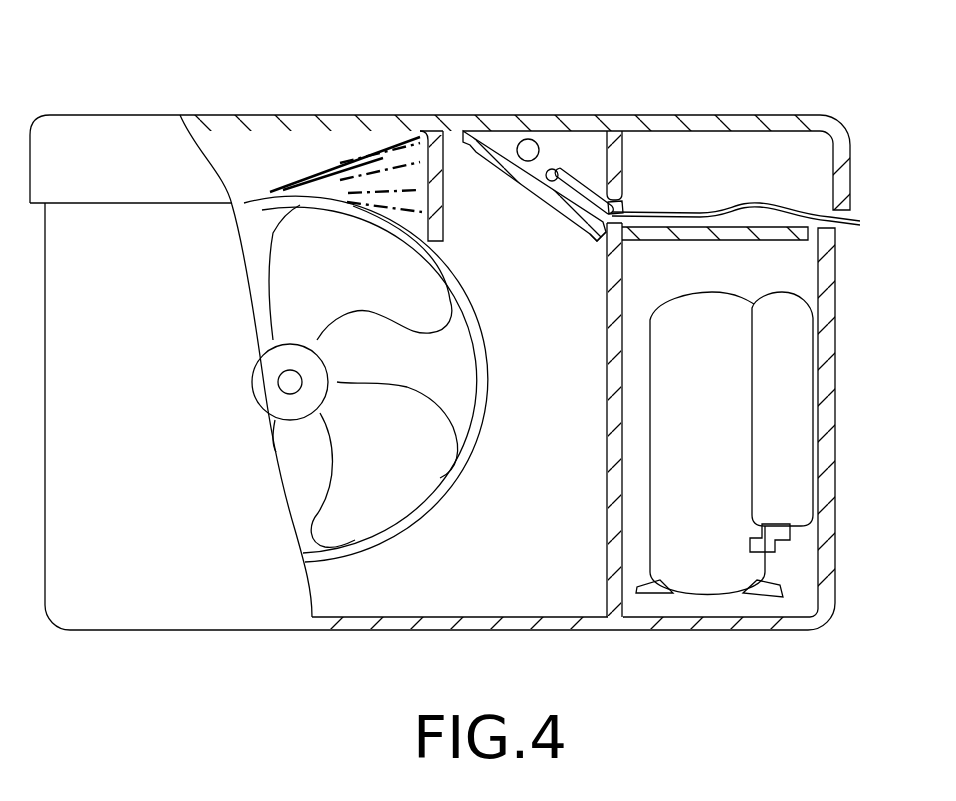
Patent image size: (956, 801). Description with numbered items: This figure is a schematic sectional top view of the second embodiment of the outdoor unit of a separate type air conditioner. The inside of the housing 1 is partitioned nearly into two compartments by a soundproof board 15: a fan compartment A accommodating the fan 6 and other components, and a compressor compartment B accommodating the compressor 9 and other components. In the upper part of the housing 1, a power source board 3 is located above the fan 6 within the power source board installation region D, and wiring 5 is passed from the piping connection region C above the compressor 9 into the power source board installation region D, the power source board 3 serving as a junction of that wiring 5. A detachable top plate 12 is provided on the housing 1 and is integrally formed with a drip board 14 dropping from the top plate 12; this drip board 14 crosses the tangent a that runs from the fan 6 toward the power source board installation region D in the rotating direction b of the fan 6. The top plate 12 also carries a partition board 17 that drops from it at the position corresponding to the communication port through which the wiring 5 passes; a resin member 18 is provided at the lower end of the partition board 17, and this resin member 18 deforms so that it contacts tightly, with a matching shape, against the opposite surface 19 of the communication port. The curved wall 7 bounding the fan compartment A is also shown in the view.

The housing 1 is at (168, 600).
The top plate 12 is at (222, 115).
The fan shroud wall 7 is at (408, 568).
The fan 6 is at (313, 237).
The drip board 14 is at (420, 140).
The tangent a is at (363, 140).
The fan compartment A is at (455, 148).
The power source board 3 is at (549, 145).
The resin member 18 is at (623, 207).
The power source board installation region D is at (586, 145).
The partition board 17 is at (645, 160).
The soundproof board 15 is at (600, 458).
The opposite surface 19 is at (600, 243).
The compressor compartment B is at (813, 268).
The wiring 5 is at (760, 190).
The piping connection region C is at (825, 170).
The compressor 9 is at (697, 567).
The rotating direction b is at (482, 298).